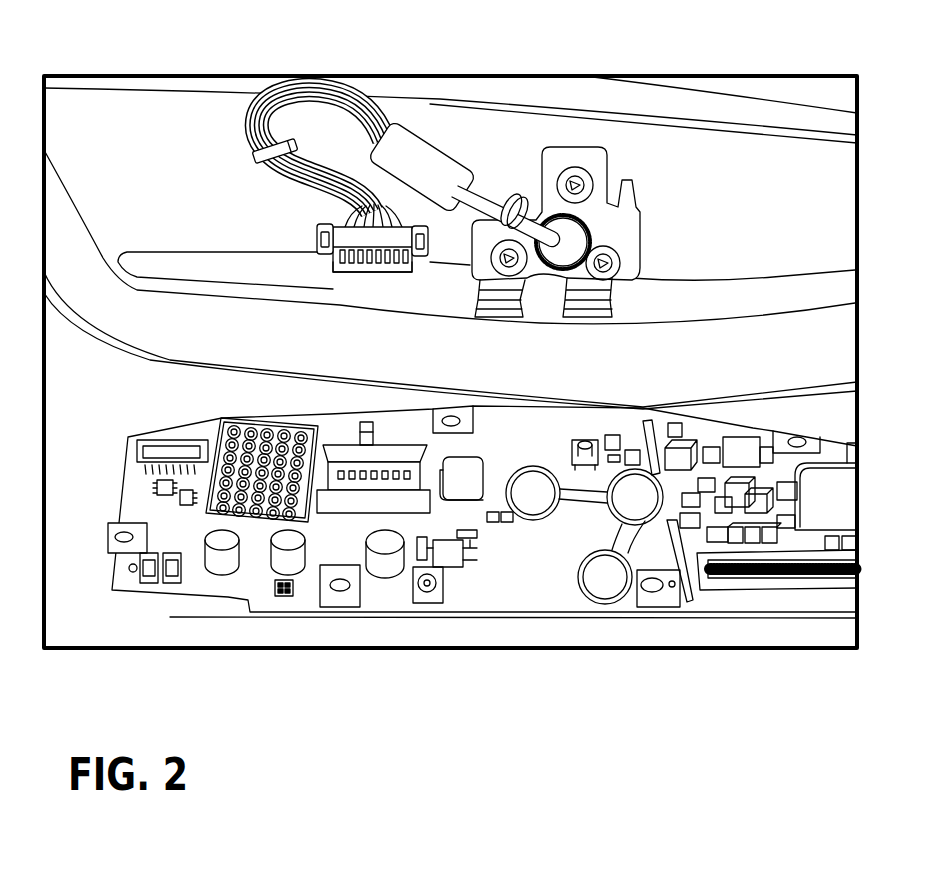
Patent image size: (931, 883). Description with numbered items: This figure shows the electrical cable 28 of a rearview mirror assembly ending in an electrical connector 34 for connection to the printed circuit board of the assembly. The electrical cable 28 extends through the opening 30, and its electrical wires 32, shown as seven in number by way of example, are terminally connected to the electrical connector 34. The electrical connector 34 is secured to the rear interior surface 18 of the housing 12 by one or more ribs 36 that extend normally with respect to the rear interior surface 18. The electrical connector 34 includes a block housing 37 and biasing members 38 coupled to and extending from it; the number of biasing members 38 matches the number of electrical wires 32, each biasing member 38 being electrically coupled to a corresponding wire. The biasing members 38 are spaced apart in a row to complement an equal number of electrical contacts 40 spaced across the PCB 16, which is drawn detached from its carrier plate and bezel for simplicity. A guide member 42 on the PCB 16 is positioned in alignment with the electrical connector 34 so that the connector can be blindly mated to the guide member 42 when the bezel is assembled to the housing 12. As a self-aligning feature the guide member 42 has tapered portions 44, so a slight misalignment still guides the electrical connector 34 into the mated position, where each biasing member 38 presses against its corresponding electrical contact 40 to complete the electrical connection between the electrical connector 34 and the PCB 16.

The housing 12 is at (780, 97).
The PCB 16 is at (257, 593).
The rear interior surface 18 is at (693, 183).
The electrical cable 28 is at (543, 193).
The opening 30 is at (575, 195).
The electrical wires 32 is at (330, 95).
The electrical connector 34 is at (300, 232).
The ribs 36 is at (315, 255).
The block housing 37 is at (333, 268).
The biasing members 38 is at (347, 264).
The electrical contacts 40 is at (362, 483).
The guide member 42 is at (405, 502).
The tapered portions 44 is at (428, 457).